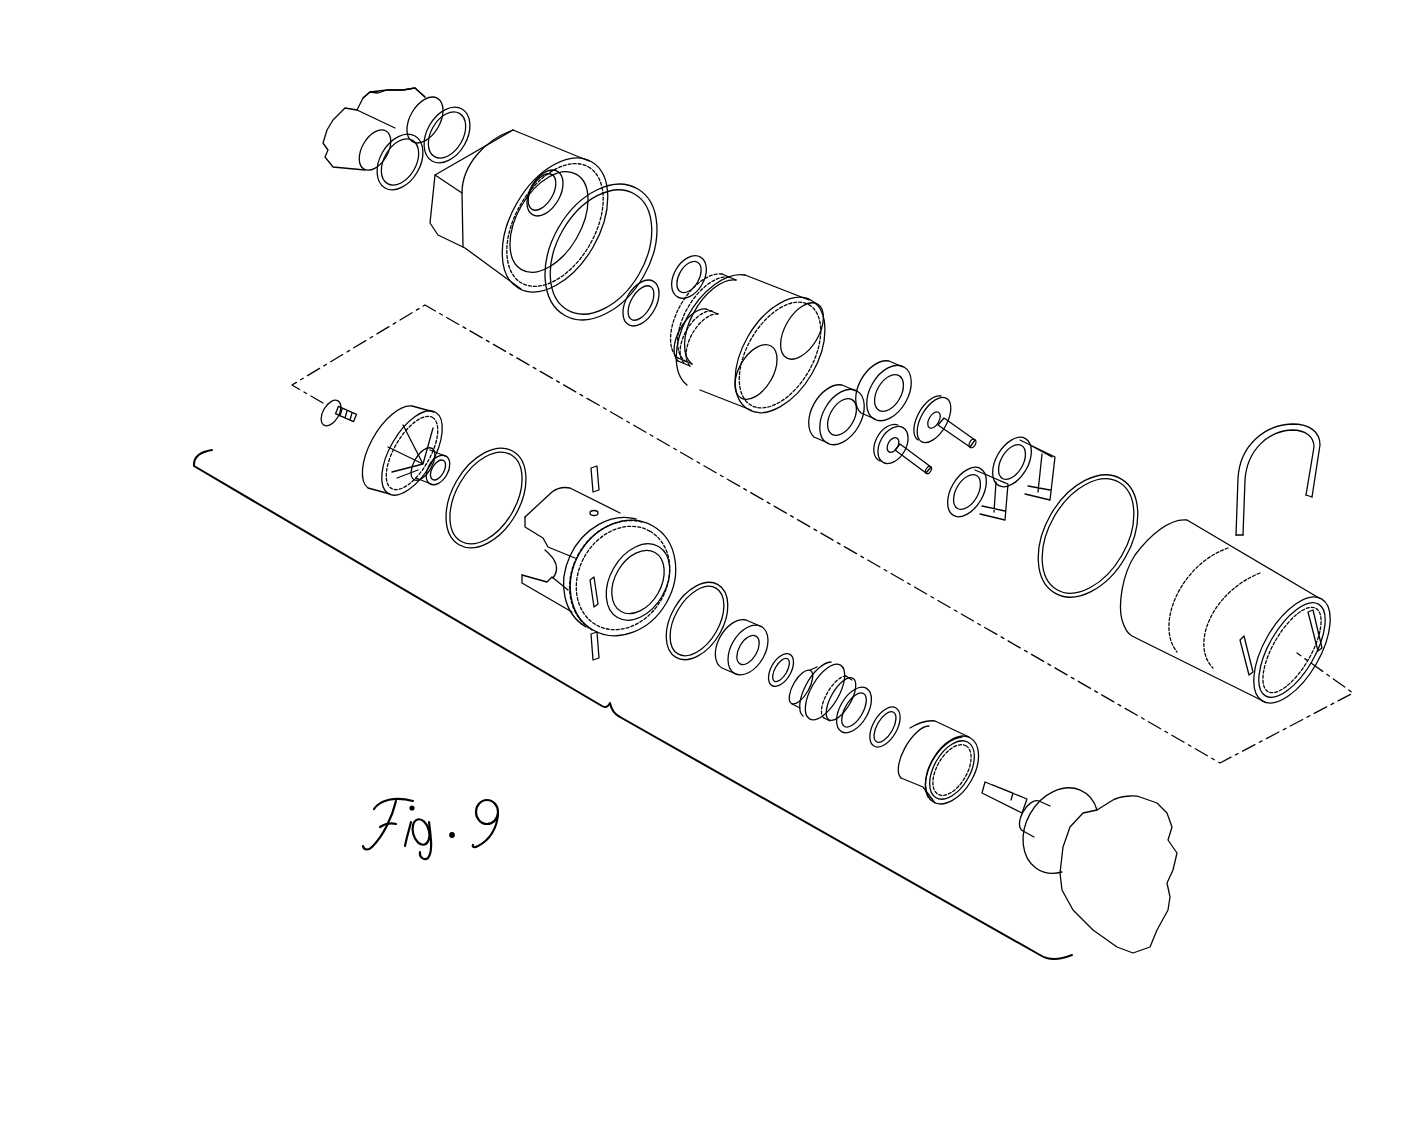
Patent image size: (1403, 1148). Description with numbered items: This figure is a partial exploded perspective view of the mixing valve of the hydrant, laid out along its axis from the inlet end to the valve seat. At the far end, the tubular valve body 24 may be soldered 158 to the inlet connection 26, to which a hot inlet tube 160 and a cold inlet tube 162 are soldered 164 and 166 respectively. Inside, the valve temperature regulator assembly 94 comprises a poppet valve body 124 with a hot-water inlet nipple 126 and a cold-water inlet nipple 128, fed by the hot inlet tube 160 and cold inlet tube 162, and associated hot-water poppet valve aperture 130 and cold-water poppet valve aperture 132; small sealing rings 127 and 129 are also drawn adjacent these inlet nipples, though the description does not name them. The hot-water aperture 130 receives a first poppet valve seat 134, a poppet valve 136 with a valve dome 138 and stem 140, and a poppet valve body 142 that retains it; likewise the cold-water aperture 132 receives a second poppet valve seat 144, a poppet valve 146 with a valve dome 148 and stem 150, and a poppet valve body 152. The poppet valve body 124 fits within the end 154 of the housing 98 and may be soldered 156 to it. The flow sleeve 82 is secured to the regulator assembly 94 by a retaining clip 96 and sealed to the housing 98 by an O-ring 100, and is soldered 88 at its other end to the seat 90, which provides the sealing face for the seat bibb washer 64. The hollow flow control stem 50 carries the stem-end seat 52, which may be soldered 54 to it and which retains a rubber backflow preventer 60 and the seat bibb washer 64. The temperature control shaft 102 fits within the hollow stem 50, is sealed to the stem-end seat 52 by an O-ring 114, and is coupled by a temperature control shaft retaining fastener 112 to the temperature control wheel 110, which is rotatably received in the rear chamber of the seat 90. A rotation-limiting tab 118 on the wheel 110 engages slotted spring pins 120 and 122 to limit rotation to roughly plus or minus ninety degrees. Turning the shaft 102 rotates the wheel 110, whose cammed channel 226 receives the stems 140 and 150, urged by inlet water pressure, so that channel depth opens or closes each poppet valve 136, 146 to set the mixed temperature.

The tubular valve body 24 is at (1161, 823).
The inlet connection 26 is at (541, 141).
The hollow flow control stem 50 is at (1033, 834).
The stem-end seat 52 is at (840, 672).
The solder 54 is at (892, 718).
The rubber backflow preventer 60 is at (947, 732).
The seat bibb washer 64 is at (753, 625).
The flow sleeve 82 is at (1074, 806).
The solder 88 is at (713, 584).
The seat 90 is at (612, 561).
The valve temperature regulator assembly 94 is at (633, 704).
The retaining clip 96 is at (1306, 429).
The housing 98 is at (1268, 576).
The O-ring 100 is at (506, 459).
The temperature control shaft 102 is at (996, 783).
The temperature control wheel 110 is at (424, 462).
The temperature control shaft retaining fastener 112 is at (340, 401).
The O-ring 114 is at (776, 683).
The rotation-limiting tab 118 is at (396, 476).
The slotted spring pin 120 is at (602, 647).
The slotted spring pin 122 is at (601, 476).
The poppet valve body 124 is at (739, 333).
The hot-water inlet nipple 126 is at (677, 345).
The O-ring 127 is at (631, 321).
The cold-water inlet nipple 128 is at (719, 292).
The O-ring 129 is at (697, 258).
The hot-water poppet valve aperture 130 is at (746, 385).
The cold-water poppet valve aperture 132 is at (809, 332).
The first poppet valve seat 134 is at (827, 431).
The poppet valve 136 is at (885, 508).
The valve dome 138 is at (886, 454).
The stem 140 is at (908, 464).
The poppet valve body 142 is at (974, 521).
The second poppet valve seat 144 is at (883, 367).
The poppet valve 146 is at (1012, 376).
The valve dome 148 is at (936, 410).
The stem 150 is at (953, 424).
The poppet valve body 152 is at (1021, 441).
The end of the housing 154 is at (1233, 593).
The solder 156 is at (1101, 476).
The solder 158 is at (627, 190).
The hot inlet tube 160 is at (330, 150).
The cold inlet tube 162 is at (404, 96).
The solder 164 is at (390, 186).
The solder 166 is at (459, 108).
The channel 226 is at (375, 458).